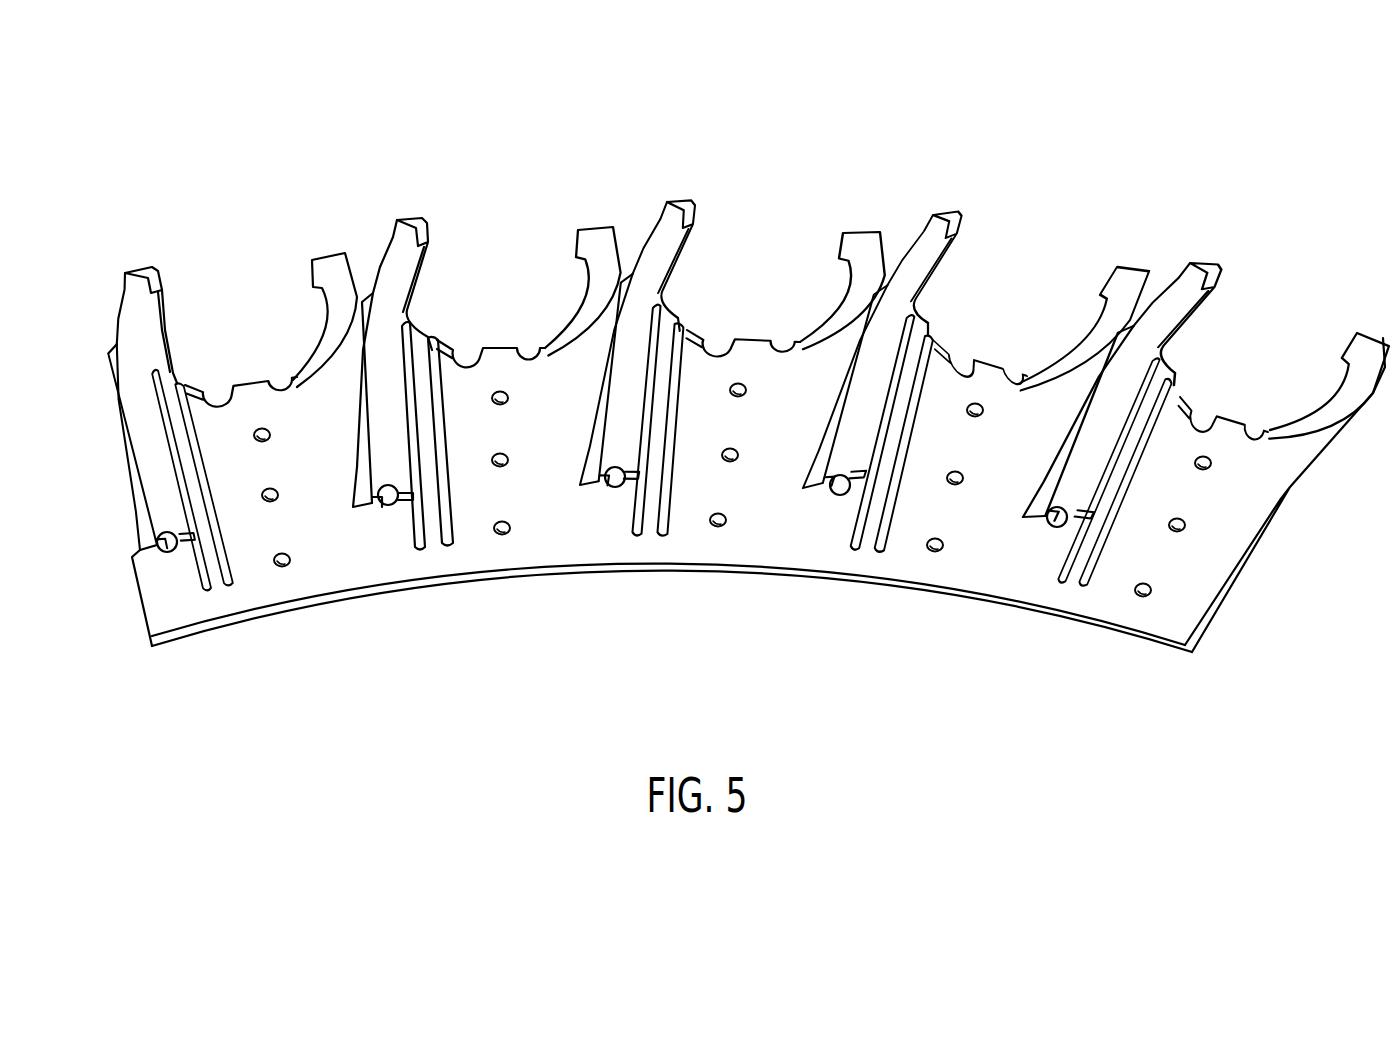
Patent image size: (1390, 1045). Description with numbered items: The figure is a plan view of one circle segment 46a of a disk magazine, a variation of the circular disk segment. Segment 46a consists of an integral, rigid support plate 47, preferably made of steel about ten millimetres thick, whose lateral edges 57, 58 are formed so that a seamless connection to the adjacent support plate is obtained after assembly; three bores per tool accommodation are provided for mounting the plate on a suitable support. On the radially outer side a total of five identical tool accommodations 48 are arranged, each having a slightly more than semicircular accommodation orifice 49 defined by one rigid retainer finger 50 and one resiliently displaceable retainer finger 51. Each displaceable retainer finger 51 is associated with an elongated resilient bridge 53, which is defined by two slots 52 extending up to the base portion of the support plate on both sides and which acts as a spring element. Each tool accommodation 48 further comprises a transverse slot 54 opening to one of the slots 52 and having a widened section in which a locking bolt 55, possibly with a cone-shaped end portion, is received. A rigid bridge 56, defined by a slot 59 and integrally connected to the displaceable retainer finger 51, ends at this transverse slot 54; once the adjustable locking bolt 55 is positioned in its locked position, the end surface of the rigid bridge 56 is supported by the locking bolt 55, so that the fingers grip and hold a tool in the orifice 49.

The circular disk segment 46a is at (718, 466).
The support plate 47 is at (520, 570).
The tool accommodation 48 is at (718, 367).
The accommodation orifice 49 is at (215, 276).
The rigid retainer finger 50 is at (318, 260).
The resiliently displaceable retainer finger 51 is at (138, 272).
The slots 52 is at (615, 447).
The resilient bridge 53 is at (168, 416).
The transverse slot 54 is at (150, 556).
The locking bolt 55 is at (155, 540).
The rigid bridge 56 is at (128, 452).
The lateral edge 57 is at (120, 363).
The lateral edge 58 is at (1290, 505).
The slot 59 is at (357, 440).